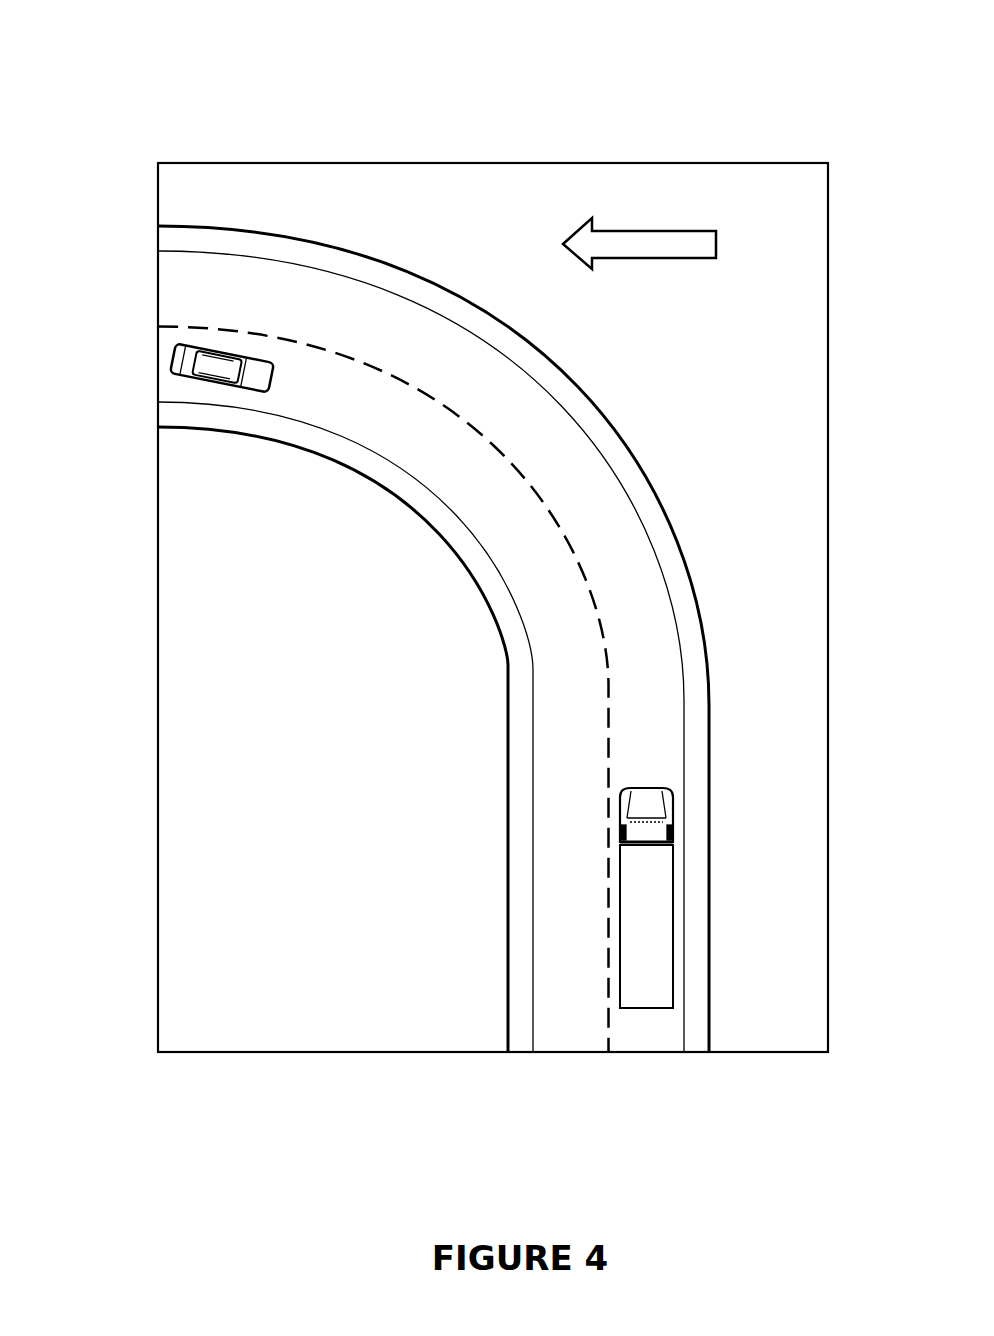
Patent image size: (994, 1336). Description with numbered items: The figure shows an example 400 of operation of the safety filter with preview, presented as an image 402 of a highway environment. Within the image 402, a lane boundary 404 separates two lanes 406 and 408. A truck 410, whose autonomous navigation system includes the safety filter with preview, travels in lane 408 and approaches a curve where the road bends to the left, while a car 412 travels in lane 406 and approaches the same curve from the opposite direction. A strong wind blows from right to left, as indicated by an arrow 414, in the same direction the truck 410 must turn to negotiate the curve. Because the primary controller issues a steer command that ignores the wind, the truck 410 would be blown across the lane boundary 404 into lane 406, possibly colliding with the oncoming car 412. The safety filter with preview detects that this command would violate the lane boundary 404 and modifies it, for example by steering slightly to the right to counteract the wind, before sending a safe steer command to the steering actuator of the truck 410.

The example 400 is at (255, 52).
The image 402 is at (158, 592).
The lane boundary 404 is at (609, 1052).
The lane 406 is at (585, 1039).
The lane 408 is at (658, 1039).
The truck 410 is at (663, 1008).
The car 412 is at (175, 376).
The arrow 414 is at (680, 258).